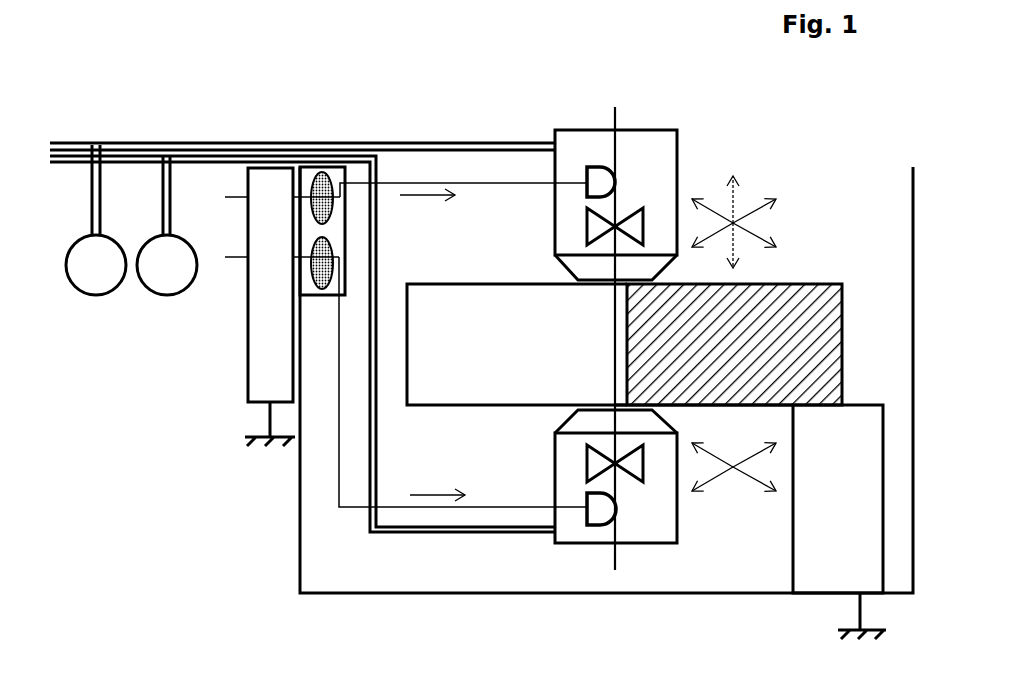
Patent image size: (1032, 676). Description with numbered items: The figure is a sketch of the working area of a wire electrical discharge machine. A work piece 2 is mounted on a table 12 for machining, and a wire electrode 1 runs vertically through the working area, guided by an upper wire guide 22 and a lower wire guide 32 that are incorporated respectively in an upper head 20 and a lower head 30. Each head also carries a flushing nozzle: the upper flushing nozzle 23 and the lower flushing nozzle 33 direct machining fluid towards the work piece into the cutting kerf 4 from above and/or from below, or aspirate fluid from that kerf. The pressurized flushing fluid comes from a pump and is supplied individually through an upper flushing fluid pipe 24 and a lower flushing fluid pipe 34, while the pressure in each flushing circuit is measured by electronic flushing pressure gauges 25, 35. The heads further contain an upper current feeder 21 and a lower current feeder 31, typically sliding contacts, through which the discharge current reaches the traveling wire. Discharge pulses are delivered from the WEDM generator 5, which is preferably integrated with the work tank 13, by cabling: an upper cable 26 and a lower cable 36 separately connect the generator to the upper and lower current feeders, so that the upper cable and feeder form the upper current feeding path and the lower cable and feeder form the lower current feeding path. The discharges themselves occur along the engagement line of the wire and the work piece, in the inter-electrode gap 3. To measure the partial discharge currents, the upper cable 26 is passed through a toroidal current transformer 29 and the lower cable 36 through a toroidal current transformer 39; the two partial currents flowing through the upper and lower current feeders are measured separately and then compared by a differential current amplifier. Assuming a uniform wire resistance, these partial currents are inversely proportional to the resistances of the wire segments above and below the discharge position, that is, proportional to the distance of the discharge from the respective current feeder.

The wire electrode 1 is at (617, 123).
The work piece 2 is at (795, 284).
The gap 3 is at (613, 338).
The cutting kerf 4 is at (459, 348).
The WEDM generator 5 is at (250, 157).
The table 12 is at (813, 560).
The work tank 13 is at (913, 477).
The upper head 20 is at (713, 138).
The upper current feeder 21 is at (583, 177).
The upper wire guide 22 is at (650, 227).
The upper flushing nozzle 23 is at (567, 267).
The upper flushing fluid pipe 24 is at (72, 147).
The upper flushing pressure gauge 25 is at (80, 293).
The upper cable 26 is at (433, 183).
The toroidal current transformer 29 is at (317, 143).
The lower head 30 is at (540, 573).
The lower current feeder 31 is at (583, 515).
The lower wire guide 32 is at (647, 470).
The lower flushing nozzle 33 is at (560, 423).
The lower flushing fluid pipe 34 is at (118, 187).
The lower flushing pressure gauge 35 is at (152, 293).
The lower cable 36 is at (343, 507).
The toroidal current transformer 39 is at (330, 253).